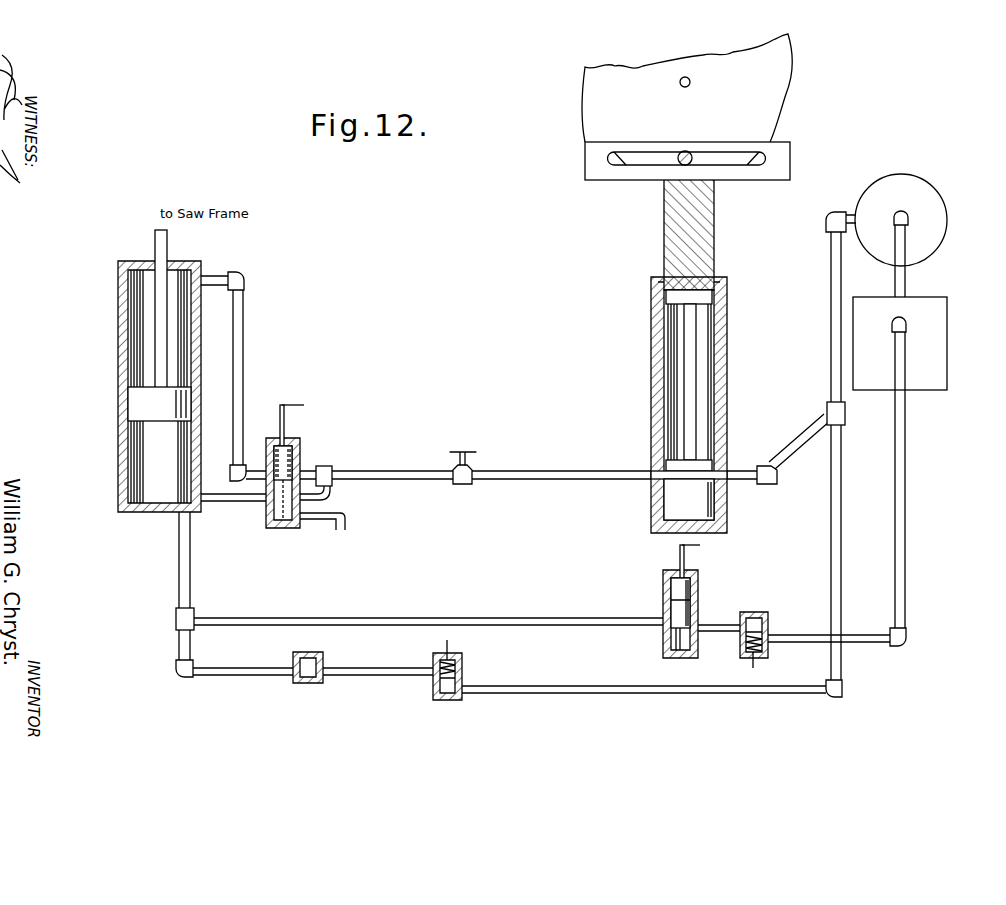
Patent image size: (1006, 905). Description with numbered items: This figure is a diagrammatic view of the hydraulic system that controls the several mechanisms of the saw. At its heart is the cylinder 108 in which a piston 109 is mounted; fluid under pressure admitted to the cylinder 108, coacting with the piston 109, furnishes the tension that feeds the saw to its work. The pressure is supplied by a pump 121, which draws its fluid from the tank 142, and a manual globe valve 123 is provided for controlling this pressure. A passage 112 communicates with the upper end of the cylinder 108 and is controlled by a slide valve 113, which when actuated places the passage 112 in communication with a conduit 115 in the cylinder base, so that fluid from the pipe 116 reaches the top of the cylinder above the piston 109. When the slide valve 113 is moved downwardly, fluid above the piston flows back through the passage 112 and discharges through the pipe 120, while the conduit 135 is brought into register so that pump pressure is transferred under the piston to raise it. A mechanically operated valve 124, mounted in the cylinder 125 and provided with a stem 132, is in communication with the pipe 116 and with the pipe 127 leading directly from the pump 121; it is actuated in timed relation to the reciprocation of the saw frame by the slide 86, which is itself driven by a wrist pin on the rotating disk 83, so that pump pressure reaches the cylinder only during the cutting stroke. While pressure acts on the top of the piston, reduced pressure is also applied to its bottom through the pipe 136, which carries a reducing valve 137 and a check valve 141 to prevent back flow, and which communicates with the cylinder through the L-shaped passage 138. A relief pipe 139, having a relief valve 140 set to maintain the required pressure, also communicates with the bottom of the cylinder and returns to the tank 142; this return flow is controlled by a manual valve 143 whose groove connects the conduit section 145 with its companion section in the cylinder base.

The disk 83 is at (777, 100).
The slide 86 is at (712, 236).
The cylinder 108 is at (120, 470).
The piston 109 is at (138, 402).
The passage 112 is at (243, 345).
The slide valve 113 is at (292, 456).
The conduit 115 is at (338, 474).
The pipe 116 is at (526, 472).
The pipe 120 is at (338, 520).
The pump 121 is at (933, 208).
The globe valve 123 is at (463, 483).
The valve 124 is at (668, 508).
The cylinder 125 is at (727, 385).
The pipe 127 is at (793, 452).
The stem 132 is at (690, 340).
The conduit 135 is at (326, 504).
The pipe 136 is at (841, 585).
The reducing valve 137 is at (436, 660).
The L-shaped passage 138 is at (182, 515).
The relief pipe 139 is at (905, 453).
The relief valve 140 is at (768, 628).
The check valve 141 is at (316, 652).
The tank 142 is at (938, 382).
The manual valve 143 is at (672, 618).
The conduit section 145 is at (386, 620).